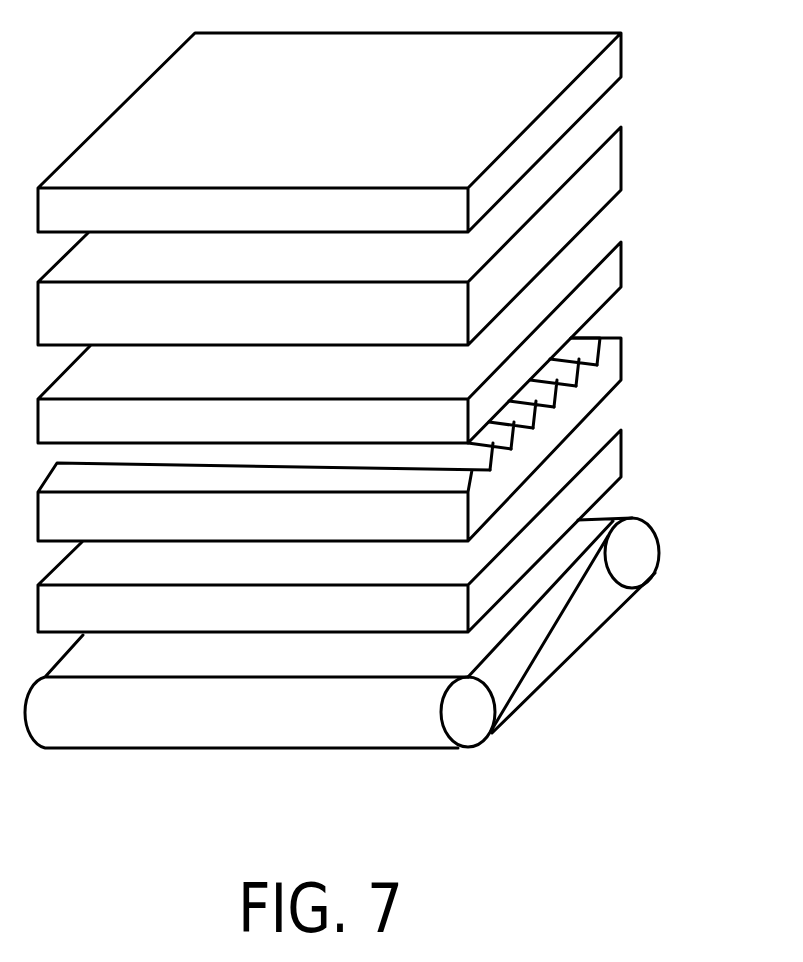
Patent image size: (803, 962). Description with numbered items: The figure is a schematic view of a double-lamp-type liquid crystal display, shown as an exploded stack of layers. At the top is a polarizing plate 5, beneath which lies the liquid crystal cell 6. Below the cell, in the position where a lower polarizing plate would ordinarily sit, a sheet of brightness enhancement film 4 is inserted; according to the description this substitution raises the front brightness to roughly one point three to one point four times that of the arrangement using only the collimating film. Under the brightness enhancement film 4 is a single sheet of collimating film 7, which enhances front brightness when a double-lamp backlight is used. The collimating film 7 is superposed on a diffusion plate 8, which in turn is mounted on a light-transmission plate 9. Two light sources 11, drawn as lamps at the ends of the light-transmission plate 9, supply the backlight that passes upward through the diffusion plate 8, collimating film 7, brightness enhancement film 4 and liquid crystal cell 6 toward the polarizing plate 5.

The polarizing plate 5 is at (622, 53).
The liquid crystal cell 6 is at (622, 155).
The brightness enhancement film 4 is at (622, 267).
The collimating film 7 is at (622, 357).
The diffusion plate 8 is at (622, 462).
The light-transmission plate 9 is at (555, 607).
The light source (lamp) 11 is at (635, 558).